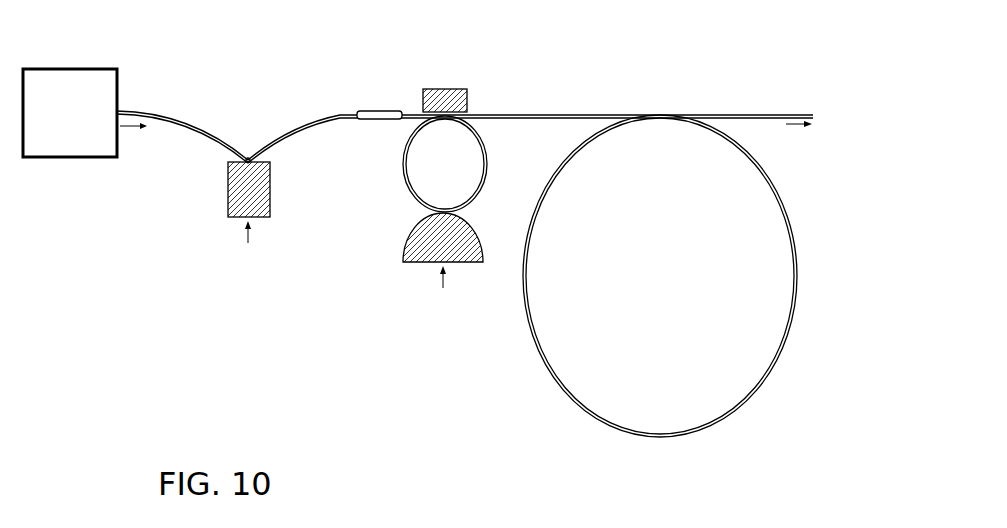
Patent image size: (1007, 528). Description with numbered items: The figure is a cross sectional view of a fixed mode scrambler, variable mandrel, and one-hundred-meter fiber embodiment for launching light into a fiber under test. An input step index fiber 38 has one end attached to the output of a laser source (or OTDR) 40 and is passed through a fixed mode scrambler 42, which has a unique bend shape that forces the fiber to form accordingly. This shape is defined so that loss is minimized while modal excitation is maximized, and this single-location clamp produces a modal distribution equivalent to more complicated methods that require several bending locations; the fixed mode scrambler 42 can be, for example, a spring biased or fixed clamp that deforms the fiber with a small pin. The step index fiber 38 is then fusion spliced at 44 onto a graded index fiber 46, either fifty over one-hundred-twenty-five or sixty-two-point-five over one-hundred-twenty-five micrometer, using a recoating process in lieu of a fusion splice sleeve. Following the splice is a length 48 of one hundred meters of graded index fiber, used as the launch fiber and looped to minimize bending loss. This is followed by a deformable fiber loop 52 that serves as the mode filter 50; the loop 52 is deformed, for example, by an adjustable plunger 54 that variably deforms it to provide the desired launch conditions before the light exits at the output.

The input step index fiber 38 is at (125, 107).
The laser source 40 is at (61, 158).
The fixed mode scrambler 42 is at (226, 188).
The fusion splice 44 is at (376, 110).
The graded index fiber 46 is at (548, 112).
The length of graded index fiber 48 is at (795, 310).
The mode filter 50 is at (467, 93).
The deformable fiber loop 52 is at (408, 148).
The adjustable plunger 54 is at (410, 239).